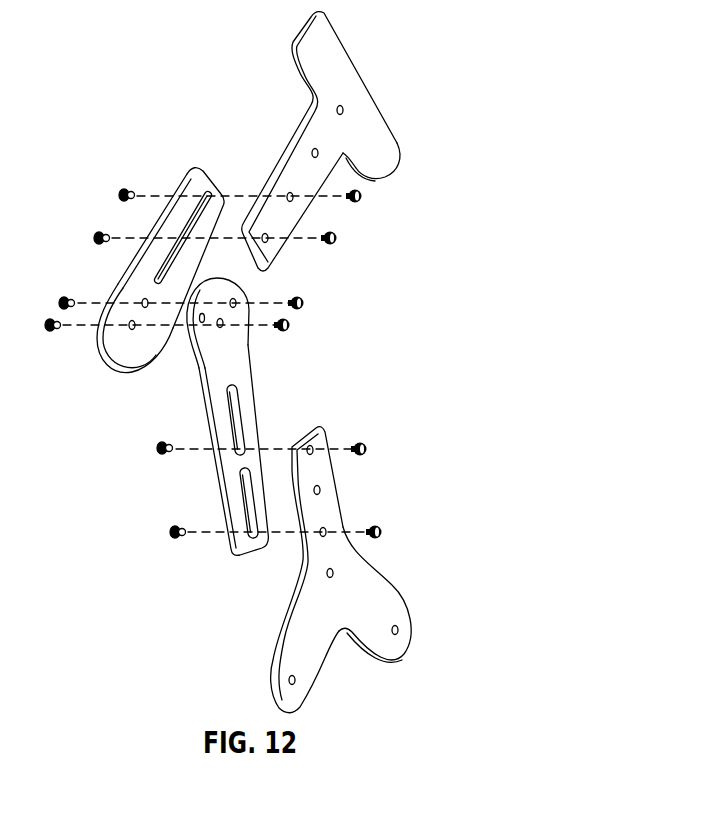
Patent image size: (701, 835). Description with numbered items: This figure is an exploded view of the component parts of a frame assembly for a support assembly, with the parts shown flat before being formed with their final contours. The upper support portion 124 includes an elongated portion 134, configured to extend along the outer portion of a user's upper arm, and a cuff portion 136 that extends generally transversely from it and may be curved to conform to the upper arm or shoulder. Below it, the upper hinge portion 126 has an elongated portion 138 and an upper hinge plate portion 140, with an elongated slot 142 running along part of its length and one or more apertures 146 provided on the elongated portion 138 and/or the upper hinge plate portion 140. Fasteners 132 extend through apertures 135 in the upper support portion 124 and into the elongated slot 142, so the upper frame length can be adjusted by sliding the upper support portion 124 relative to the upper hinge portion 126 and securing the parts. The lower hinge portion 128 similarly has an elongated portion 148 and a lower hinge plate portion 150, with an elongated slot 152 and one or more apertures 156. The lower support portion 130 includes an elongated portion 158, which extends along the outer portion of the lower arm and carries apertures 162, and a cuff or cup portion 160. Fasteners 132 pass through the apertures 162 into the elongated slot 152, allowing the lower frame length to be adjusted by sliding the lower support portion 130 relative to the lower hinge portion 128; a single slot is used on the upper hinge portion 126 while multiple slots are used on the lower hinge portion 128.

The upper support portion 124 is at (356, 139).
The upper hinge portion 126 is at (139, 255).
The lower hinge portion 128 is at (210, 409).
The lower support portion 130 is at (383, 552).
The fasteners 132 is at (362, 200).
The elongated portion 134 is at (293, 163).
The apertures 135 is at (272, 240).
The cuff portion 136 is at (383, 143).
The elongated portion 138 is at (193, 192).
The upper hinge plate portion 140 is at (117, 350).
The elongated slot 142 is at (205, 200).
The apertures 146 is at (143, 302).
The elongated portion 148 is at (250, 425).
The lower hinge plate portion 150 is at (240, 292).
The elongated slot 152 is at (237, 402).
The apertures 156 is at (203, 328).
The elongated portion 158 is at (330, 502).
The cuff or cup portion 160 is at (387, 602).
The apertures 162 is at (314, 445).